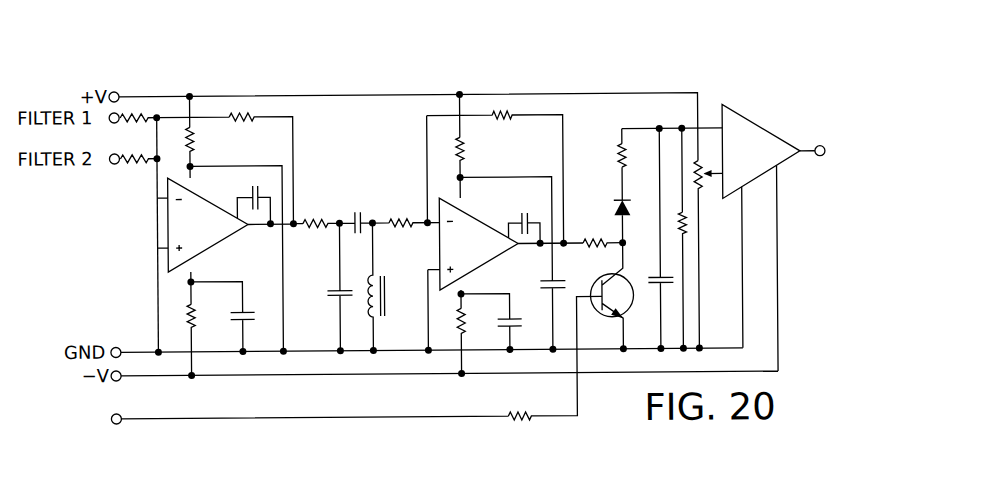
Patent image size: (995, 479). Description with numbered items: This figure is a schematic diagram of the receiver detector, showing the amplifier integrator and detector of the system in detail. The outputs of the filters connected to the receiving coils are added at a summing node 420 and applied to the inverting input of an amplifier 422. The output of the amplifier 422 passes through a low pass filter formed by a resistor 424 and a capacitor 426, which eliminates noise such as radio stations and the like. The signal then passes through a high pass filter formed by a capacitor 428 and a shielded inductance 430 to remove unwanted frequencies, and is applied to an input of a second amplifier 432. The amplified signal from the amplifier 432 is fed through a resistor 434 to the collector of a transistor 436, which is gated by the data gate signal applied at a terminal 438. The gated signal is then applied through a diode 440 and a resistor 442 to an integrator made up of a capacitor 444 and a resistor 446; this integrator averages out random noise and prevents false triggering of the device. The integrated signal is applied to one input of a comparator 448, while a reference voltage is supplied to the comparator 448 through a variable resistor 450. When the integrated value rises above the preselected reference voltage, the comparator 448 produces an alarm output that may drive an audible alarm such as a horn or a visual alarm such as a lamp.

The summing node 420 is at (156, 199).
The amplifier 422 is at (228, 236).
The resistor 424 is at (310, 219).
The capacitor 426 is at (333, 291).
The capacitor 428 is at (359, 216).
The shielded inductance 430 is at (376, 277).
The amplifier 432 is at (477, 233).
The resistor 434 is at (590, 243).
The transistor 436 is at (593, 288).
The terminal 438 is at (128, 414).
The diode 440 is at (616, 207).
The resistor 442 is at (617, 154).
The capacitor 444 is at (657, 281).
The resistor 446 is at (688, 234).
The comparator 448 is at (812, 237).
The variable resistor 450 is at (700, 195).